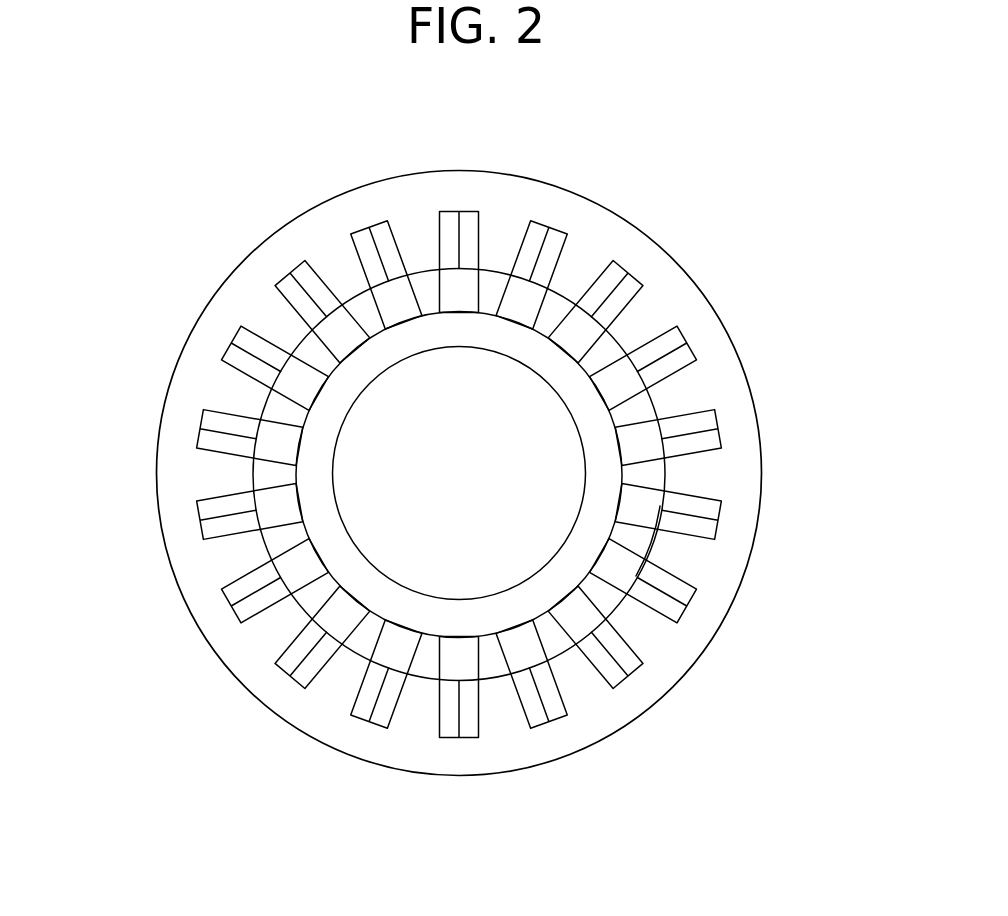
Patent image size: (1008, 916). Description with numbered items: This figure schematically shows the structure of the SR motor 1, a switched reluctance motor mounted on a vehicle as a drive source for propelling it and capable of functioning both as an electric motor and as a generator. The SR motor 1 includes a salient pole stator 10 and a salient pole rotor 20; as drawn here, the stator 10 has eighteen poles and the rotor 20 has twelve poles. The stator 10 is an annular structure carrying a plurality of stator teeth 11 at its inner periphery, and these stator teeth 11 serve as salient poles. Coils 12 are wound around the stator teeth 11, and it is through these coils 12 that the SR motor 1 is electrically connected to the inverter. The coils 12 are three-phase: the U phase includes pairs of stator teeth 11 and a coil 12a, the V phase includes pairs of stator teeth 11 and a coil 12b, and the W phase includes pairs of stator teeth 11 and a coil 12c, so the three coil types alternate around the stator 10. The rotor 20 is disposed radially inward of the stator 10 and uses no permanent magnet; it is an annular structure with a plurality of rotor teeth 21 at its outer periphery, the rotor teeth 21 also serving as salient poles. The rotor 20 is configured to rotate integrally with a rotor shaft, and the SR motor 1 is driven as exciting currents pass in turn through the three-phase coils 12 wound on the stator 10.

The SR motor 1 is at (716, 113).
The stator 10 is at (395, 172).
The stator teeth 11 is at (638, 635).
The coils 12 is at (464, 471).
The coil 12a is at (375, 235).
The coil 12b is at (296, 280).
The coil 12c is at (450, 218).
The rotor 20 is at (583, 358).
The rotor teeth 21 is at (632, 550).